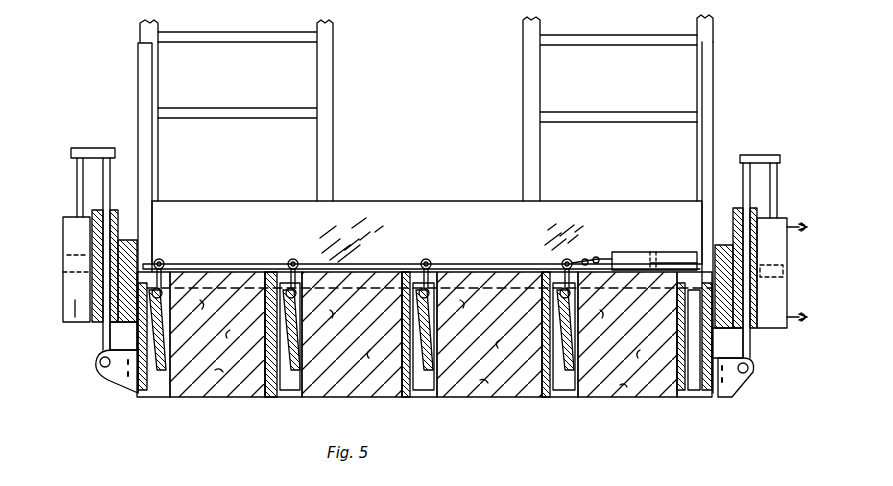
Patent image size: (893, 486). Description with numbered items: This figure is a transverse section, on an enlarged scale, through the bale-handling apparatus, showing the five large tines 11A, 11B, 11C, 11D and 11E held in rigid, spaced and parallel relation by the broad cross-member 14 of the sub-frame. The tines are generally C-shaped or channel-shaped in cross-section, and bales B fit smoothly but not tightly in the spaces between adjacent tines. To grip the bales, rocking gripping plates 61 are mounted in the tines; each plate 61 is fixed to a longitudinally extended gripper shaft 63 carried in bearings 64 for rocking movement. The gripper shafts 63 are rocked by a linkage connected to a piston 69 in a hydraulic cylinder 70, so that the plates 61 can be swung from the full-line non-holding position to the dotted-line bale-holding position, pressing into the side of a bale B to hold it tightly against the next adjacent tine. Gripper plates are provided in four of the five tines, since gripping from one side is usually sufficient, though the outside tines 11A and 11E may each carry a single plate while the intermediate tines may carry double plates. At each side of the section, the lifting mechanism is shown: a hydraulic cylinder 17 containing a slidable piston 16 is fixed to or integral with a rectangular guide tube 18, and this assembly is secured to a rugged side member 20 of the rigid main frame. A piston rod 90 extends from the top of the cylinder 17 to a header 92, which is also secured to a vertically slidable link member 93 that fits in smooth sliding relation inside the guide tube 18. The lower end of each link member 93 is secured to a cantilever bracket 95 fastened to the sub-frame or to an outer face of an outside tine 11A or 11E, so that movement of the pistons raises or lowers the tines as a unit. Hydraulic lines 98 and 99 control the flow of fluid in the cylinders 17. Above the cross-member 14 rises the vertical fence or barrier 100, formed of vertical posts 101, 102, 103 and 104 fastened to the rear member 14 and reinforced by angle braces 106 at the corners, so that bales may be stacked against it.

The cross-member 14 is at (437, 217).
The piston 16 is at (63, 277).
The hydraulic cylinder 17 is at (63, 247).
The guide tube 18 is at (118, 212).
The main frame side member 20 is at (140, 255).
The gripping plate 61 is at (158, 340).
The gripper shaft 63 is at (165, 275).
The bearing 64 is at (280, 305).
The piston 69 is at (653, 252).
The hydraulic cylinder 70 is at (616, 256).
The piston rod 90 is at (77, 177).
The header 92 is at (95, 148).
The link member 93 is at (110, 172).
The cantilever bracket 95 is at (122, 373).
The hydraulic line 98 is at (806, 227).
The hydraulic line 99 is at (806, 317).
The fence 100 is at (426, 108).
The post 101 is at (155, 80).
The post 102 is at (320, 62).
The post 103 is at (533, 77).
The post 104 is at (697, 78).
The angle brace 106 is at (138, 68).
The tine 11A is at (700, 397).
The tine 11B is at (572, 397).
The tine 11C is at (425, 397).
The tine 11D is at (268, 397).
The tine 11E is at (150, 397).
The block B is at (203, 397).